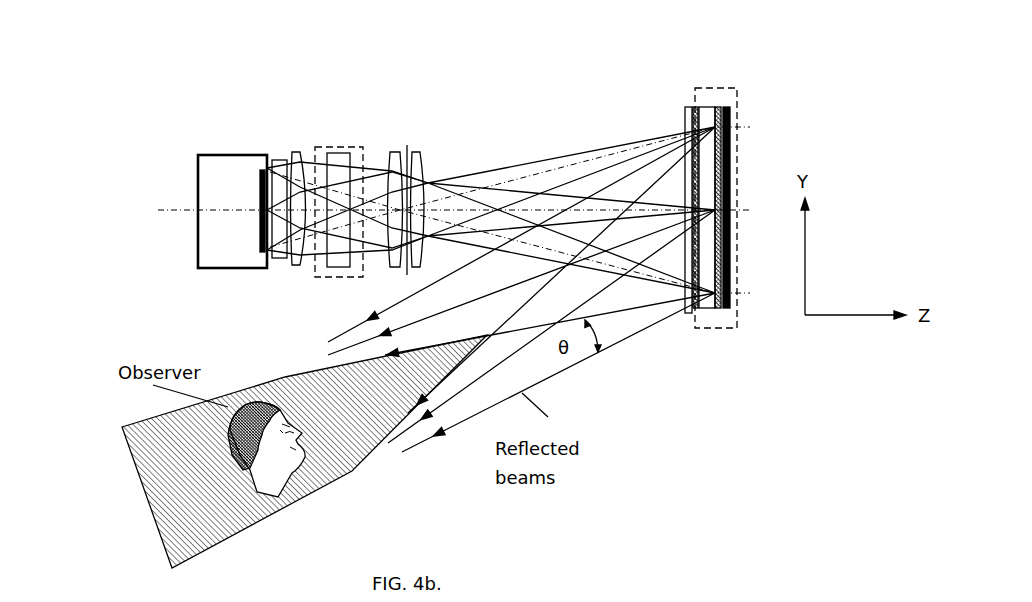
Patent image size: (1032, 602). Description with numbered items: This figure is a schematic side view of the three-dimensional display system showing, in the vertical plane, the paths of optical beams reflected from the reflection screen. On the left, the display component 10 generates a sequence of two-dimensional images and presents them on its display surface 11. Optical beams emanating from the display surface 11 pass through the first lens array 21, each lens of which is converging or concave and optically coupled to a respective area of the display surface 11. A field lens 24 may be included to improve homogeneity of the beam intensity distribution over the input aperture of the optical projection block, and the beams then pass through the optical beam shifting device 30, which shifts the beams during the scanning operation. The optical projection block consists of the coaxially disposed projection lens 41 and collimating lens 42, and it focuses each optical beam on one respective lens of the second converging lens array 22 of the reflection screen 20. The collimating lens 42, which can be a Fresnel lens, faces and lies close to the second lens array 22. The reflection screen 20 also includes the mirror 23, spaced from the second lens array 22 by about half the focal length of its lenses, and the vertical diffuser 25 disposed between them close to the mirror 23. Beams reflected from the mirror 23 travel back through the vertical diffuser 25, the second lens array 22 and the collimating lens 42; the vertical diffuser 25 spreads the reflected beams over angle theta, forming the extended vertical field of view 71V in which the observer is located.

The display component 10 is at (197, 191).
The display surface 11 is at (257, 247).
The first lens array 21 is at (278, 163).
The field lens 24 is at (302, 160).
The optical beam shifting device 30 is at (357, 145).
The projection lens 41 is at (423, 155).
The collimating lens 42 is at (688, 107).
The second converging lens array 22 is at (700, 110).
The vertical diffuser 25 is at (722, 112).
The mirror 23 is at (730, 142).
The reflection screen 20 is at (720, 325).
The extended vertical field of view 71V is at (175, 485).